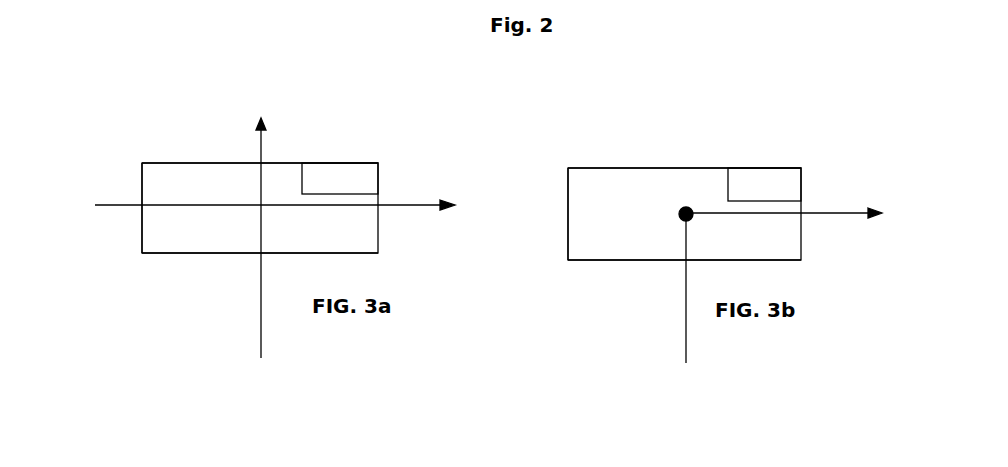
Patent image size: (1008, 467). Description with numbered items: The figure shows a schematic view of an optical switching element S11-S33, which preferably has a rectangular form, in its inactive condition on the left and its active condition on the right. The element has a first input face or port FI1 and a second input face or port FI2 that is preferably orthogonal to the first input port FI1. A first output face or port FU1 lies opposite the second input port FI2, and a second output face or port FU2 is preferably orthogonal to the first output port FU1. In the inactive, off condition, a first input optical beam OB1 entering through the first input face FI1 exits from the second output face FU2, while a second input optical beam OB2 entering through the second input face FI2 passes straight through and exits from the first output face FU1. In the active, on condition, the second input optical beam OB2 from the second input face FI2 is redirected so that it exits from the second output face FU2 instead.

In FIG. 3A, the sensor elements S11-S33 is at (167, 177).
In FIG. 3B, the sensor elements S11-S33 is at (623, 188).
In FIG. 3A, the first output face or port FU1 is at (234, 163).
In FIG. 3B, the first output face or port FU1 is at (660, 168).
In FIG. 3A, the second output face or port FU2 is at (378, 201).
In FIG. 3B, the second output face or port FU2 is at (801, 203).
In FIG. 3A, the first input optical beam OB1 is at (112, 205).
In FIG. 3A, the second input optical beam OB2 is at (261, 332).
In FIG. 3B, the second input optical beam OB2 is at (686, 338).
In FIG. 3A, the first input face or port FI1 is at (142, 221).
In FIG. 3B, the first input face or port FI1 is at (568, 228).
In FIG. 3A, the second input face or port FI2 is at (238, 253).
In FIG. 3B, the second input face or port FI2 is at (663, 260).